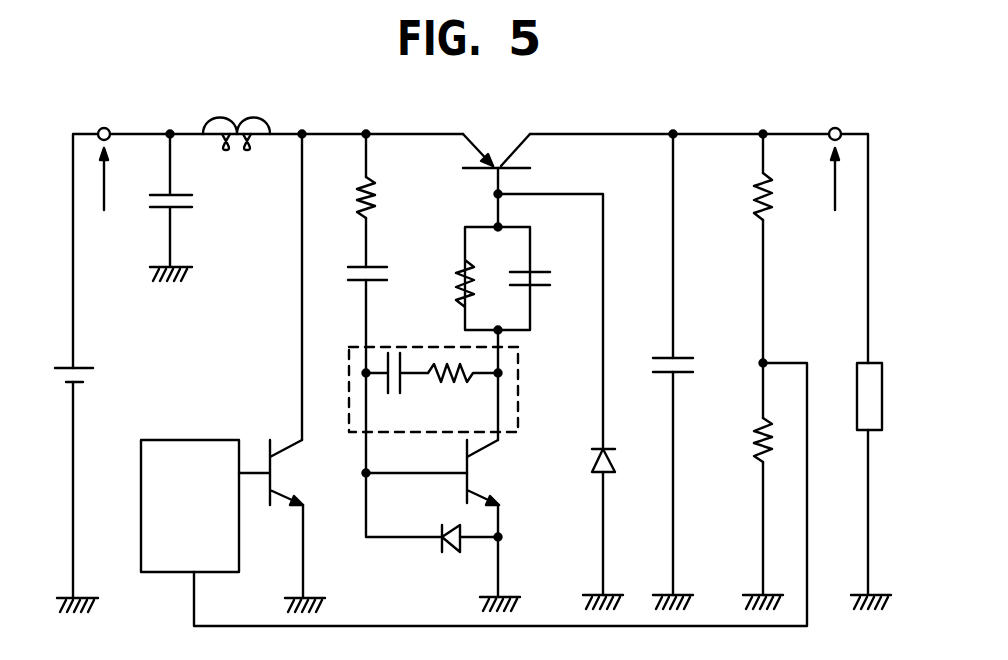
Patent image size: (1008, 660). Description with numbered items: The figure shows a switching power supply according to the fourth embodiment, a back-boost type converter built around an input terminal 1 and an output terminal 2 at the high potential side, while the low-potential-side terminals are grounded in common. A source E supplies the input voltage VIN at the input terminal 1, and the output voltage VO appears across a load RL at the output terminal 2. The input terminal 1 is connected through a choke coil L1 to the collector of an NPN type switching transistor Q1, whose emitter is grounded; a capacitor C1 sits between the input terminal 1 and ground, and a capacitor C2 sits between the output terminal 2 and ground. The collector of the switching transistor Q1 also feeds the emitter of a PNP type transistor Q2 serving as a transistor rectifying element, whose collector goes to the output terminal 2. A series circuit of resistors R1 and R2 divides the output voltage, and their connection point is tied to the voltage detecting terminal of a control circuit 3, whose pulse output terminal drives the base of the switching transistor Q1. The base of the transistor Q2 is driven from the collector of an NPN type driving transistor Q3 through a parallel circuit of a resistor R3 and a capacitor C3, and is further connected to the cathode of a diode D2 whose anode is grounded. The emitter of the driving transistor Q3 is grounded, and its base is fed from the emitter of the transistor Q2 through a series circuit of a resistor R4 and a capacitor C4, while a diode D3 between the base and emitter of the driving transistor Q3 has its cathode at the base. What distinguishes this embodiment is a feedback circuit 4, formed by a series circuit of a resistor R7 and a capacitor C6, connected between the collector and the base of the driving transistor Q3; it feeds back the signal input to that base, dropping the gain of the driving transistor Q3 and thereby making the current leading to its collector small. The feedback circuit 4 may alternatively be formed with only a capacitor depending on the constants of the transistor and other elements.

The input terminal 1 is at (106, 127).
The output terminal 2 is at (834, 127).
The control circuit 3 is at (212, 440).
The feedback circuit 4 is at (343, 349).
The choke coil L1 is at (236, 123).
The capacitor C1 is at (192, 207).
The input voltage VIN is at (105, 202).
The battery E is at (84, 392).
The switching transistor Q1 is at (292, 472).
The transistor rectifying element Q2 is at (522, 159).
The driving transistor Q3 is at (511, 472).
The resistor R4 is at (391, 197).
The capacitor C4 is at (387, 253).
The resistor R3 is at (470, 278).
The capacitor C3 is at (547, 300).
The capacitor C6 is at (397, 392).
The resistor R7 is at (463, 398).
The diode D3 is at (439, 559).
The diode D2 is at (621, 479).
The capacitor C2 is at (659, 350).
The resistor R1 is at (740, 206).
The resistor R2 is at (742, 440).
The load resistor RL is at (855, 397).
The output voltage VO is at (828, 201).